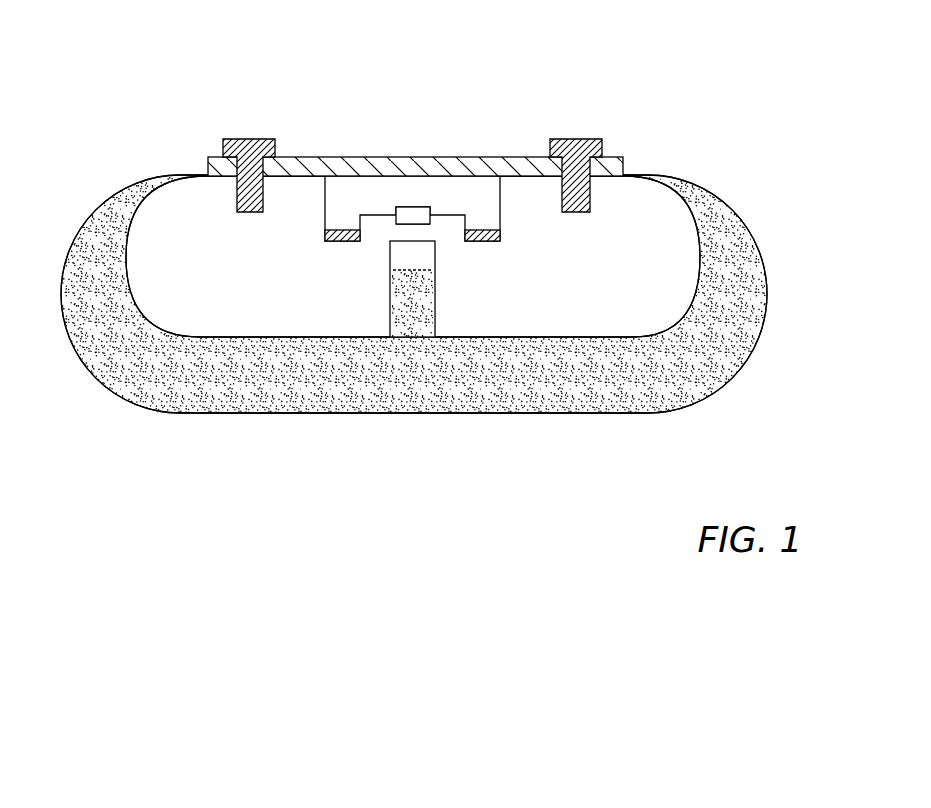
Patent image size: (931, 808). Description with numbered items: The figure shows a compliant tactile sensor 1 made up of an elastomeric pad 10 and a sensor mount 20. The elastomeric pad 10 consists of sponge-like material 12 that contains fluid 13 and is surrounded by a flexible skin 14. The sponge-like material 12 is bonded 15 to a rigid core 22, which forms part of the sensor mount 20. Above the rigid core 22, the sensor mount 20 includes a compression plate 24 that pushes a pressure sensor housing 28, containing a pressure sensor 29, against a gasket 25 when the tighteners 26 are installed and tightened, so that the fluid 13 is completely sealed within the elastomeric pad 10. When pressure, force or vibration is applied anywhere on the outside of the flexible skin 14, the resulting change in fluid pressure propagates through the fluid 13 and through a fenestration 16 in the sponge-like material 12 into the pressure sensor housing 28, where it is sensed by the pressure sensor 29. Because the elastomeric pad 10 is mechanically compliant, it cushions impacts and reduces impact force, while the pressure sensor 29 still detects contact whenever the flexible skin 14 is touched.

The compliant tactile sensor 1 is at (788, 178).
The elastomeric pad 10 is at (760, 455).
The sponge-like material 12 is at (225, 350).
The fluid 13 is at (320, 393).
The flexible skin 14 is at (288, 415).
The bond 15 is at (173, 333).
The fenestration 16 is at (415, 272).
The sensor mount 20 is at (193, 63).
The rigid core 22 is at (224, 293).
The compression plate 24 is at (207, 167).
The gasket 25 is at (327, 237).
The tighteners 26 is at (252, 149).
The pressure sensor housing 28 is at (340, 206).
The pressure sensor 29 is at (420, 207).